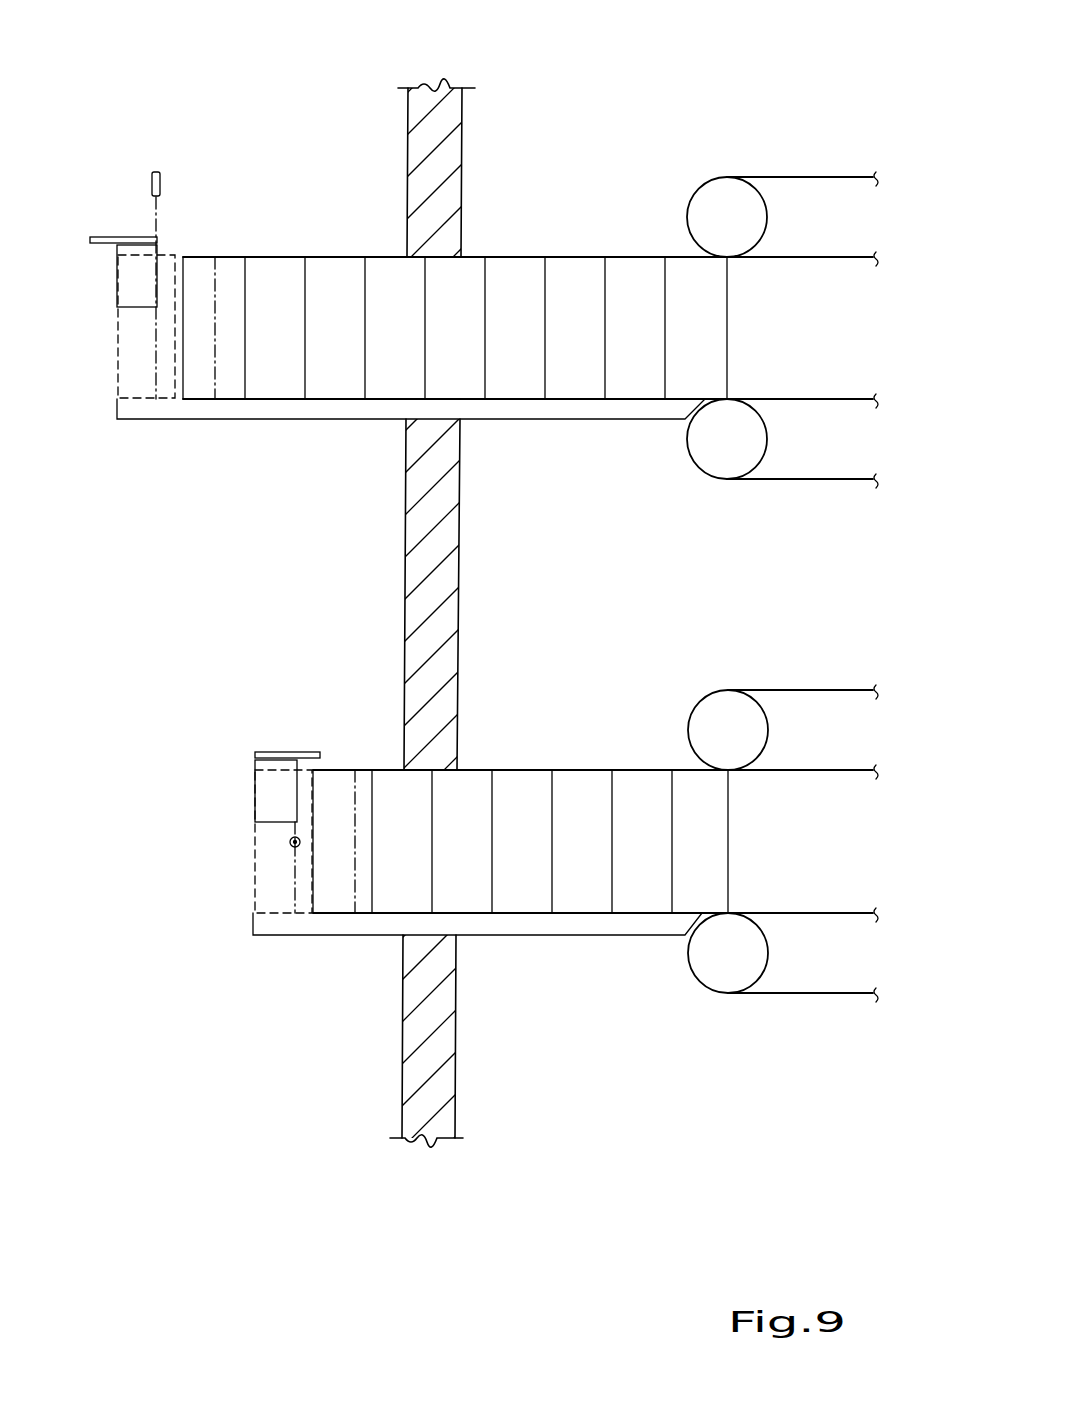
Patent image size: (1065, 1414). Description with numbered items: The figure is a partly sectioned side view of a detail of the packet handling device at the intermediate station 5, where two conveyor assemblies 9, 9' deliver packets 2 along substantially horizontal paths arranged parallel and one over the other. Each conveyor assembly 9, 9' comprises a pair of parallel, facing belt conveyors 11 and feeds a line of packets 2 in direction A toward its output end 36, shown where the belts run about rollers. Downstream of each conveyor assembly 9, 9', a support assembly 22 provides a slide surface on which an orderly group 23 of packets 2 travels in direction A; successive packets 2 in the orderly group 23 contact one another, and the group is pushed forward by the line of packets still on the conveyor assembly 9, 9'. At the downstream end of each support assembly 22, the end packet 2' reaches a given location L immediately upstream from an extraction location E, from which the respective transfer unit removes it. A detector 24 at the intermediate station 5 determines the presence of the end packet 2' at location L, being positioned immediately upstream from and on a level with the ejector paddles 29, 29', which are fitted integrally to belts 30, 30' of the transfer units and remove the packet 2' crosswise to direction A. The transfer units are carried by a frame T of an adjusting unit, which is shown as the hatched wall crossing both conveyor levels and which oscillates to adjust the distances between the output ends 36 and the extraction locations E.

The intermediate station 5 is at (225, 108).
The frame T is at (380, 1070).
The conveyor assembly 9 is at (543, 286).
The conveyor assembly 9' is at (612, 791).
The orderly group 23 is at (590, 228).
The packets 2 is at (420, 603).
The packet 2' is at (278, 582).
The location L is at (198, 268).
The support assembly 22 is at (130, 415).
The output ends 36 is at (690, 172).
The belt conveyors 11 is at (792, 195).
The belt 30 is at (112, 205).
The belt 30' is at (273, 726).
The ejector paddles 29 is at (106, 278).
The ejector paddles 29' is at (234, 791).
The extraction location E is at (128, 340).
The detector 24 is at (162, 184).
The direction A is at (640, 1157).